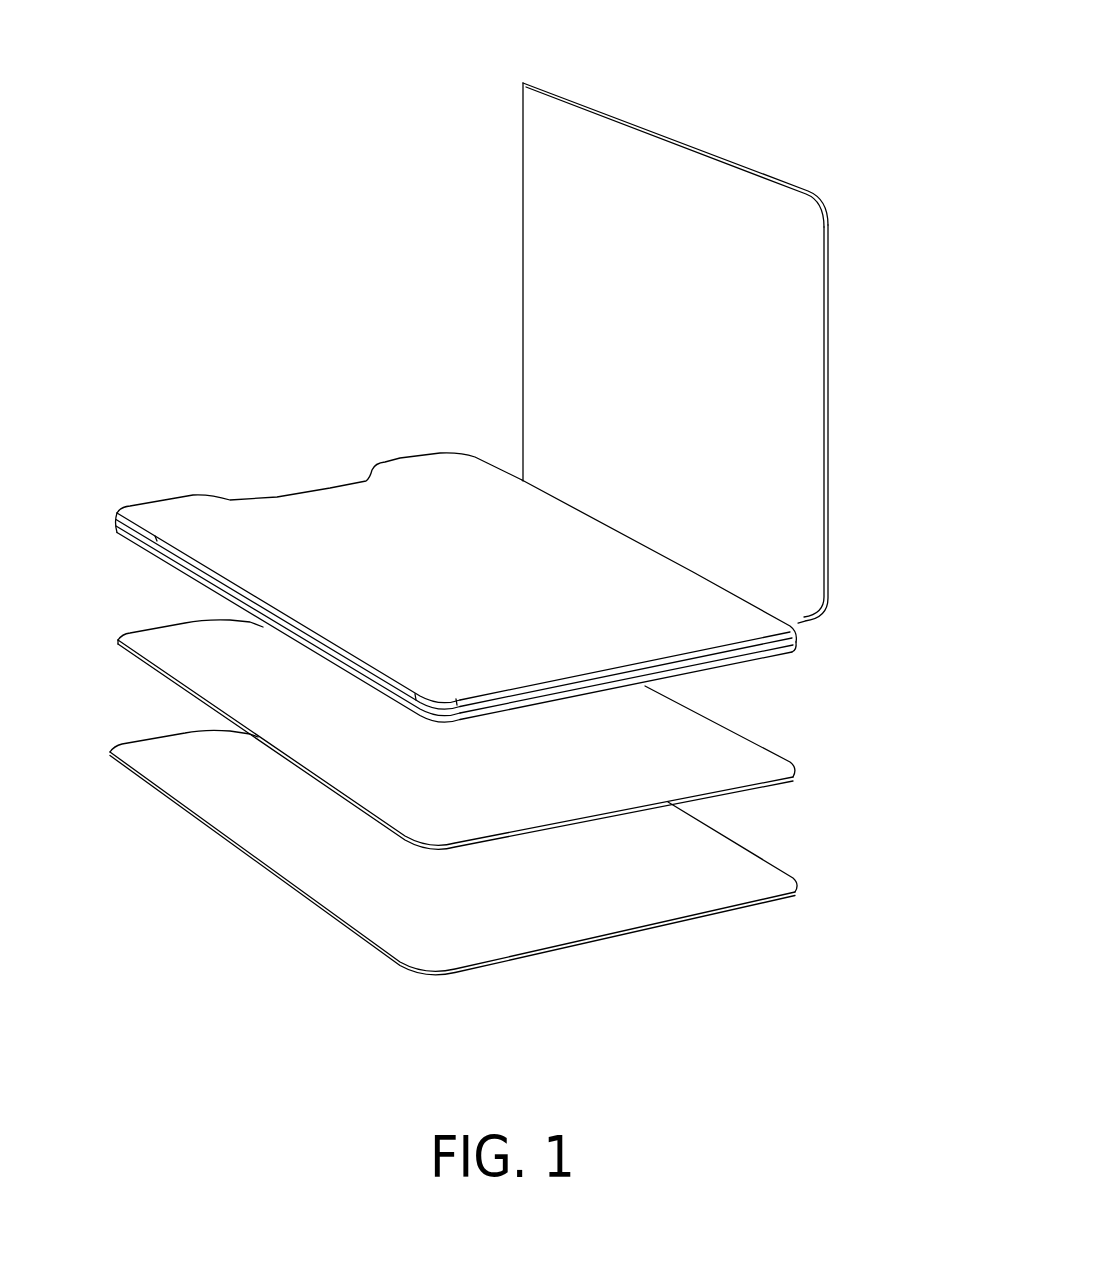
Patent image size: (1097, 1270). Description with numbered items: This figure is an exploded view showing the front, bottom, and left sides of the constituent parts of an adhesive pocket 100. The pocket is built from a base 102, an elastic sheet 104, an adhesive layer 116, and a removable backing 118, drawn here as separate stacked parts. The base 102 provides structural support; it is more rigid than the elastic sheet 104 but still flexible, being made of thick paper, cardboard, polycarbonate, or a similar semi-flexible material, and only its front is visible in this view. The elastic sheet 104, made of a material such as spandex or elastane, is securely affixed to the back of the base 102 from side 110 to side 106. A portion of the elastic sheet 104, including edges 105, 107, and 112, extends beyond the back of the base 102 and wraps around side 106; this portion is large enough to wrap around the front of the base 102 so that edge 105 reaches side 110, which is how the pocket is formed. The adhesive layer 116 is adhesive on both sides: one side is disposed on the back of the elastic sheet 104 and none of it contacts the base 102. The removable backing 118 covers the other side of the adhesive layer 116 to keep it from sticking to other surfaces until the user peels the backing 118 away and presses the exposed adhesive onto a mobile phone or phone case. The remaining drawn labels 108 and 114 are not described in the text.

The adhesive pocket 100 is at (226, 63).
The base 102 is at (478, 518).
The elastic sheet 104 is at (760, 270).
The edge 105 is at (680, 143).
The side 106 is at (693, 572).
The edge 107 is at (827, 423).
The tray front edge 108 is at (693, 668).
The side 110 is at (187, 563).
The edge 112 is at (520, 365).
The notched top edge 114 is at (280, 497).
The adhesive layer 116 is at (743, 785).
The removable backing 118 is at (615, 935).